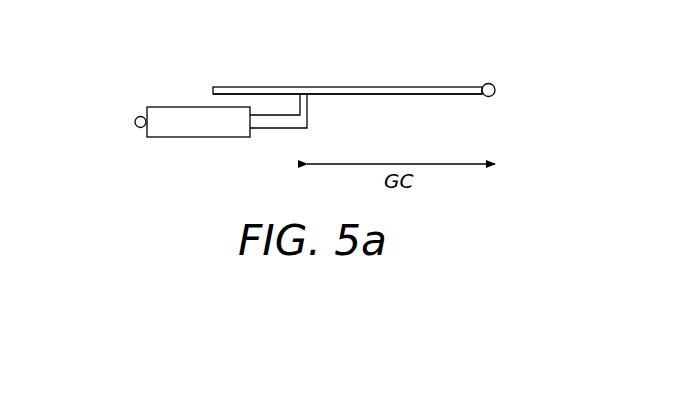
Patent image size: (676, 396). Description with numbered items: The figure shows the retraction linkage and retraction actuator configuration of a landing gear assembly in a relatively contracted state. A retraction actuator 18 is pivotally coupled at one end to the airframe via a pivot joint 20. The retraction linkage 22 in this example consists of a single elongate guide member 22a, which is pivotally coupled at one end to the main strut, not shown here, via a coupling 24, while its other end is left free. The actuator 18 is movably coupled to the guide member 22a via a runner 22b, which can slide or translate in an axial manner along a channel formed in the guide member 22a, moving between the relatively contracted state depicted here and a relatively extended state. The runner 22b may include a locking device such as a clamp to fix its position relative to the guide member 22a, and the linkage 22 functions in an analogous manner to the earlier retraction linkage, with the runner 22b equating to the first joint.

The retraction actuator 18 is at (197, 137).
The pivot joint 20 is at (135, 122).
The retraction linkage 22 is at (390, 75).
The guide member 22a is at (427, 97).
The runner 22b is at (308, 98).
The coupling 24 is at (495, 90).